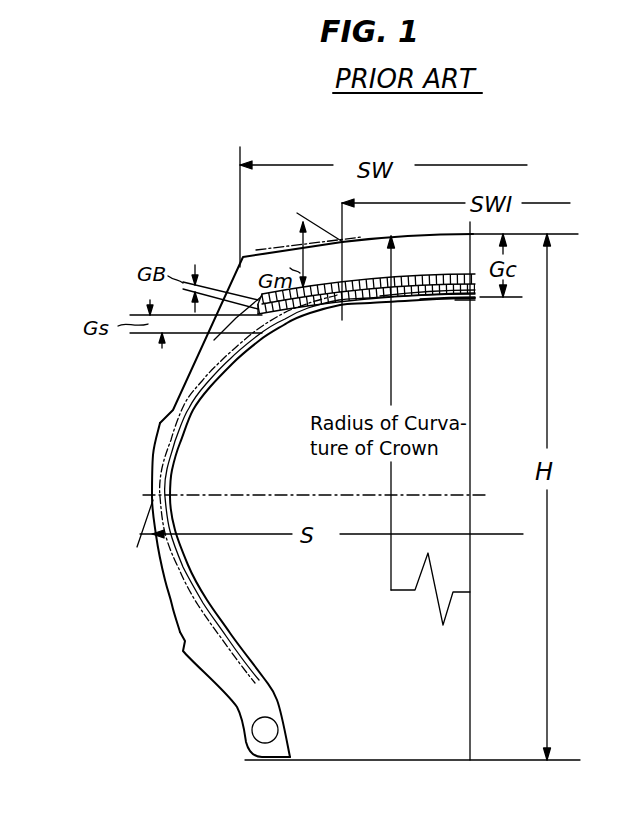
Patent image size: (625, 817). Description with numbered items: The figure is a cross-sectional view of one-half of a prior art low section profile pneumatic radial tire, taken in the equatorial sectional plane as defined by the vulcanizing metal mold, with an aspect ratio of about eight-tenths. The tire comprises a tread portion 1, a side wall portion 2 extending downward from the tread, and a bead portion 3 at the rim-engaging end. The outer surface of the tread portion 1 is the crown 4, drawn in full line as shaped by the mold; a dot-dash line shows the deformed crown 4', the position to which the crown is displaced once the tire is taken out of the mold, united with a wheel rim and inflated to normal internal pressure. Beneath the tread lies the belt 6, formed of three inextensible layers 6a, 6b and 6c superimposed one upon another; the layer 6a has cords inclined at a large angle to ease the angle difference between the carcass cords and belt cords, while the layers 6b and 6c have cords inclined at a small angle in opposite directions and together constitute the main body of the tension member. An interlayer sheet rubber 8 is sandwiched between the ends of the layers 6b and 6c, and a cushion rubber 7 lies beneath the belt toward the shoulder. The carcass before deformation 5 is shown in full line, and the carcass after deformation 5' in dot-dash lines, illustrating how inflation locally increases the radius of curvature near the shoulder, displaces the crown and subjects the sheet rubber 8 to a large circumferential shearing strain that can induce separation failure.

The tread portion 1 is at (403, 245).
The side wall portion 2 is at (152, 490).
The bead portion 3 is at (240, 727).
The crown 4 is at (320, 188).
The deformed crown 4' is at (309, 190).
The carcass before deformation 5 is at (368, 317).
The carcass after deformation 5' is at (255, 357).
The belt 6 is at (352, 303).
The inextensible layer 6a is at (383, 303).
The inextensible layer 6b is at (423, 300).
The inextensible layer 6c is at (460, 299).
The cushion rubber 7 is at (232, 350).
The interlayer sheet rubber 8 is at (280, 316).